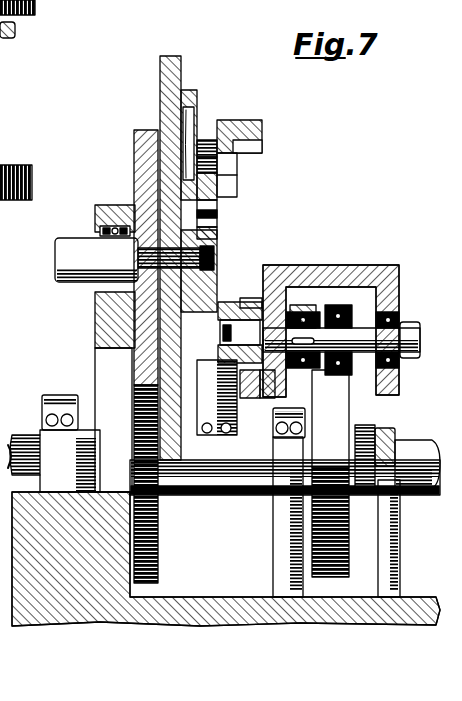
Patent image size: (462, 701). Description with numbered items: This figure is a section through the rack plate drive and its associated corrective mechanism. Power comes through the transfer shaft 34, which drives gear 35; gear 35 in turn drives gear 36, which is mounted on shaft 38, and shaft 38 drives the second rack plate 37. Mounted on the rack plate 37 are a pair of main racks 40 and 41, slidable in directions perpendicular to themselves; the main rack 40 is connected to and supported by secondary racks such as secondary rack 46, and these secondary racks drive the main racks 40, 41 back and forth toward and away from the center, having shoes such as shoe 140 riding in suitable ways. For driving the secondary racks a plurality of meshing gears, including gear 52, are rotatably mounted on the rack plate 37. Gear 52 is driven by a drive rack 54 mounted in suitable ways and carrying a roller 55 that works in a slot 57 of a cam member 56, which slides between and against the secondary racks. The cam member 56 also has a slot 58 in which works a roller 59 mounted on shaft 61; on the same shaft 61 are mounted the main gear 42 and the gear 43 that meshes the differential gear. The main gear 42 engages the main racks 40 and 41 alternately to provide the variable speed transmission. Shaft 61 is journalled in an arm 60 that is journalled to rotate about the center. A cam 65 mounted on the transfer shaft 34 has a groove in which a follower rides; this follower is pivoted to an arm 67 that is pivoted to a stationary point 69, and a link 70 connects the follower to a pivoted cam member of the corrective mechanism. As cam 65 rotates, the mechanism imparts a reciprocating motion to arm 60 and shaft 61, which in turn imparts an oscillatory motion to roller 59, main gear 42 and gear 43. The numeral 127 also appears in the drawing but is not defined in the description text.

The transfer shaft 34 is at (208, 490).
The gear 35 is at (36, 8).
The gear 36 is at (134, 140).
The rack plate 37 is at (176, 55).
The shaft 38 is at (55, 282).
The main rack 40 is at (262, 140).
The main rack 41 is at (242, 385).
The main gear 42 is at (293, 305).
The gear 43 is at (300, 312).
The secondary rack 46 is at (205, 140).
The gear 52 is at (231, 215).
The drive rack 54 is at (231, 178).
The roller 55 is at (231, 200).
The cam member 56 is at (270, 229).
The slot 57 is at (231, 229).
The slot 58 is at (228, 302).
The roller 59 is at (250, 300).
The arm 60 is at (378, 268).
The shaft 61 is at (417, 328).
The cam 65 is at (330, 577).
The arm 67 is at (363, 457).
The stationary point 69 is at (402, 432).
The link 70 is at (386, 430).
The pedestal 127 is at (262, 561).
The shoe 140 is at (0, 45).